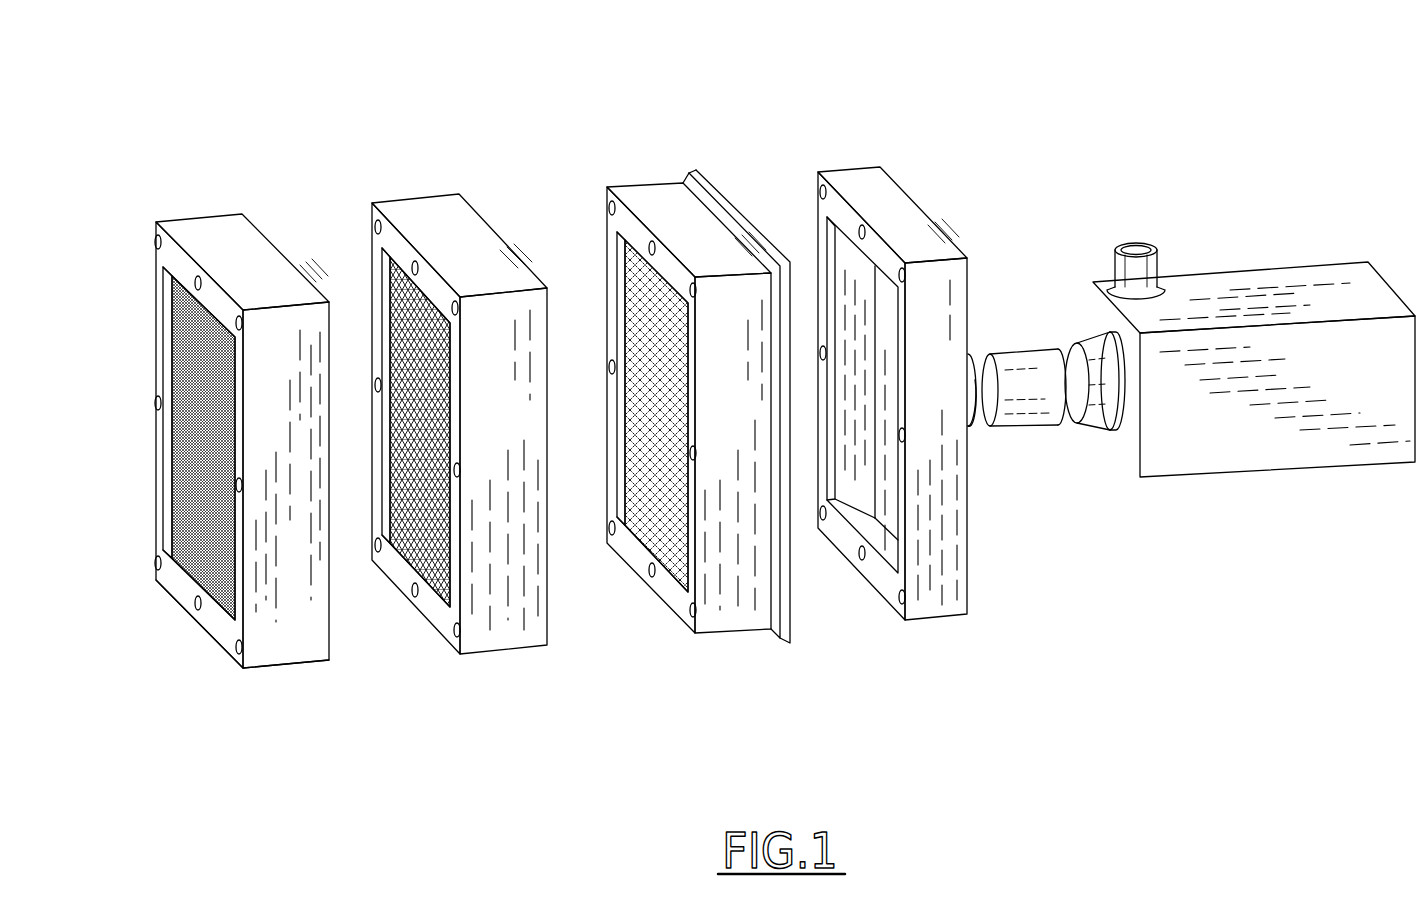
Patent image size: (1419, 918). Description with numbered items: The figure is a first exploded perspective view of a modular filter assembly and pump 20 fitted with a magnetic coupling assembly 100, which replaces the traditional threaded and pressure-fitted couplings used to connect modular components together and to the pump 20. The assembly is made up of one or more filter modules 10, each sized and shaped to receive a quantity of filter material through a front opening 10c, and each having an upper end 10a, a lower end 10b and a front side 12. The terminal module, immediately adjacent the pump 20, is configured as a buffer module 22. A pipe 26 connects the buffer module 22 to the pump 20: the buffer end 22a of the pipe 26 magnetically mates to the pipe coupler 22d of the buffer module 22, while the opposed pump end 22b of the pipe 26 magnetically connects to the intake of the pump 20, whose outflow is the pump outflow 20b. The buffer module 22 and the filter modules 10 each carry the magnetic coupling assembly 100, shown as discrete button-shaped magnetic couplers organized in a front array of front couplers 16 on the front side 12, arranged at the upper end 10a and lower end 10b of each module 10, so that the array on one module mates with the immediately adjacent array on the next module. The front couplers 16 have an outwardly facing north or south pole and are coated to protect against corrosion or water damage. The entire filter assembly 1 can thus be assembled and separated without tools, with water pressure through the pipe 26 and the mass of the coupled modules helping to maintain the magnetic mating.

The filter assembly 1 is at (903, 272).
The filter module 10 is at (250, 237).
The upper end 10a is at (150, 247).
The lower end 10b is at (128, 578).
The front opening 10c is at (158, 447).
The front side 12 is at (130, 314).
The front coupler 16 is at (155, 403).
The pump 20 is at (1095, 405).
The pump outflow 20b is at (1140, 262).
The buffer module 22 is at (935, 523).
The buffer end of pipe 22a is at (970, 358).
The pump end of pipe 22b is at (1058, 408).
The pipe coupler 22d is at (973, 420).
The pipe 26 is at (1016, 350).
The magnetic coupling assembly 100 is at (188, 716).